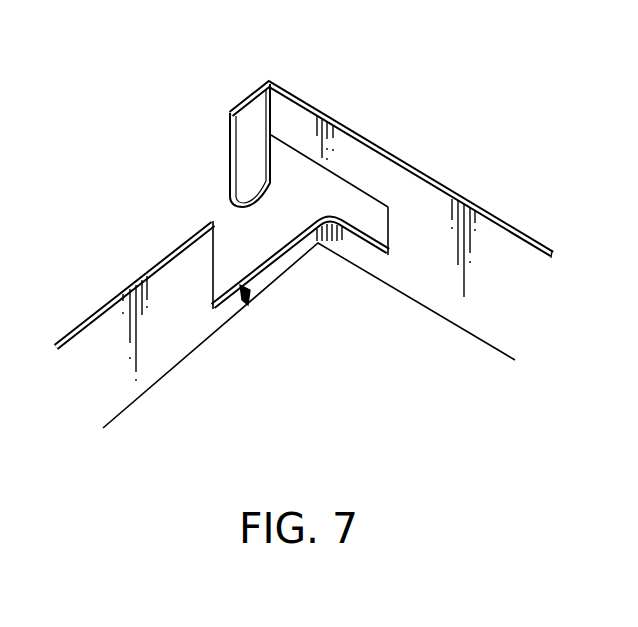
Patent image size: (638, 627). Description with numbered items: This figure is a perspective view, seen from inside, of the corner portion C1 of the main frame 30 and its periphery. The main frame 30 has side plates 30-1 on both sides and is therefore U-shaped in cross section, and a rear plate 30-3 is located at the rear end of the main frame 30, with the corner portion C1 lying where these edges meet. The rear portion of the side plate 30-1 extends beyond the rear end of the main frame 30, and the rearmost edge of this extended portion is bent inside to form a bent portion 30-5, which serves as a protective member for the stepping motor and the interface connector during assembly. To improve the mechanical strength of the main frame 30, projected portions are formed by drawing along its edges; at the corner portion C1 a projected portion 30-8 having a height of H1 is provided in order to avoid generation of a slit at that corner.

The main frame 30 is at (191, 366).
The side plate 30-1 is at (487, 208).
The rear plate 30-3 is at (122, 291).
The bent portion 30-5 is at (231, 156).
The projected portion 30-8 is at (304, 237).
The height H1 is at (248, 298).
The corner portion C1 is at (318, 248).